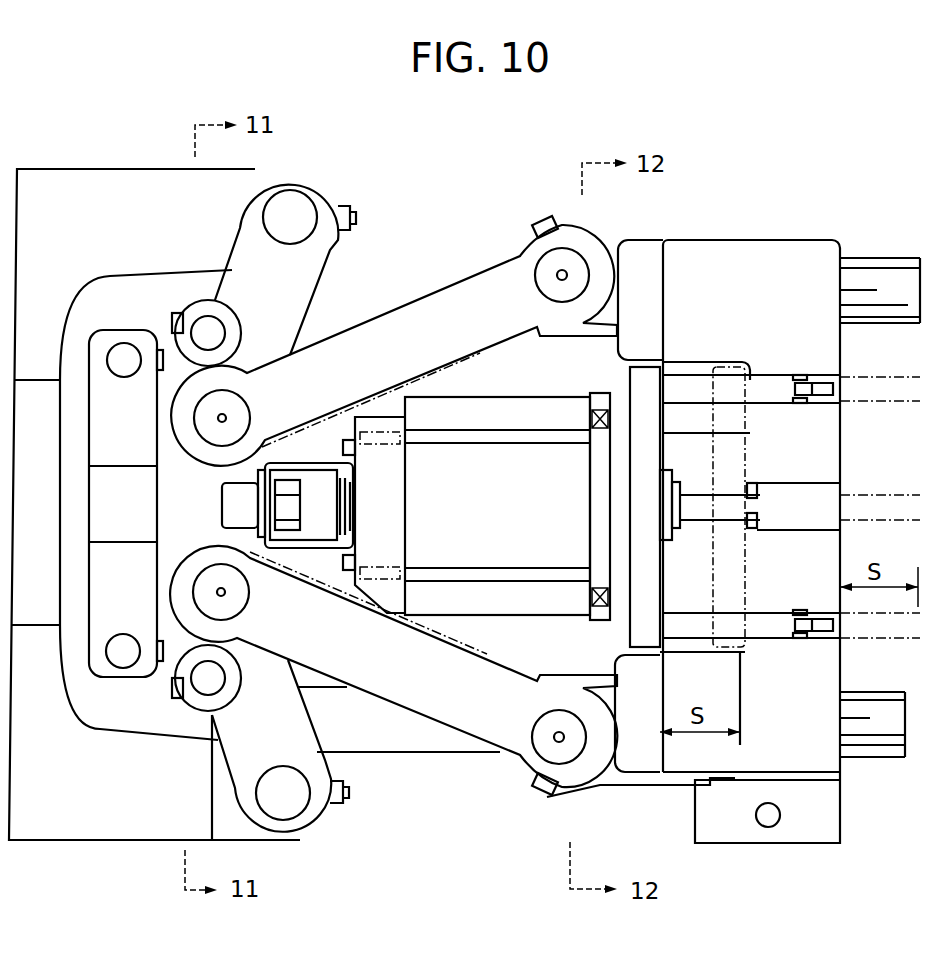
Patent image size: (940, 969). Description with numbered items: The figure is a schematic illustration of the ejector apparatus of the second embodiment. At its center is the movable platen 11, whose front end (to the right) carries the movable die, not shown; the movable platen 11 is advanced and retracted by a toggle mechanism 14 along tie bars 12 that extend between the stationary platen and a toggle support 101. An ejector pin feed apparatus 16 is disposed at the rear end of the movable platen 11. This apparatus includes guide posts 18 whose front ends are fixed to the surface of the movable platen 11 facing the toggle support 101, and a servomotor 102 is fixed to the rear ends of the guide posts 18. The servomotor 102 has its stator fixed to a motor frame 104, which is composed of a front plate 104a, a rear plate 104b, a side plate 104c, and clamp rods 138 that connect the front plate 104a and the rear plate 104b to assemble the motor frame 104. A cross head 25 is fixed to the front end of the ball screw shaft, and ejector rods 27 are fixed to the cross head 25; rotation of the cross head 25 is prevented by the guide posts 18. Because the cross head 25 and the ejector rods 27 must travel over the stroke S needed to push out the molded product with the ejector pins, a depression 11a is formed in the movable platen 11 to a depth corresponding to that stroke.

The toggle support 101 is at (90, 827).
The movable platen 11 is at (788, 258).
The depression 11a is at (695, 558).
The tie bars 12 is at (884, 273).
The toggle mechanism 14 is at (412, 283).
The ejector pin feed apparatus 16 is at (494, 640).
The guide posts 18 is at (632, 460).
The cross head 25 is at (617, 560).
The ejector rods 27 is at (773, 383).
The servomotor 102 is at (497, 462).
The motor frame 104 is at (466, 448).
The front plate 104a is at (682, 410).
The rear plate 104b is at (388, 410).
The side plate 104c is at (463, 600).
The clamp rods 138 is at (548, 437).